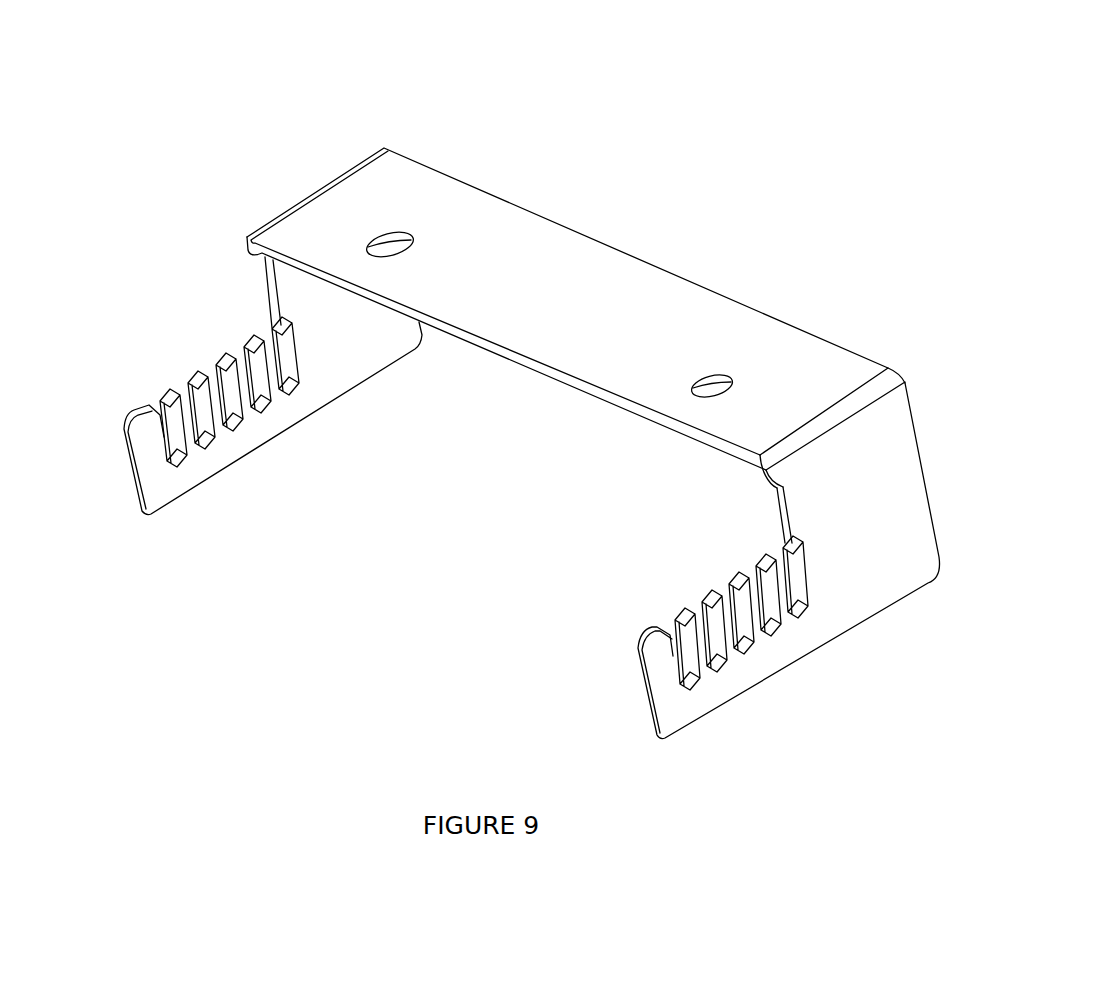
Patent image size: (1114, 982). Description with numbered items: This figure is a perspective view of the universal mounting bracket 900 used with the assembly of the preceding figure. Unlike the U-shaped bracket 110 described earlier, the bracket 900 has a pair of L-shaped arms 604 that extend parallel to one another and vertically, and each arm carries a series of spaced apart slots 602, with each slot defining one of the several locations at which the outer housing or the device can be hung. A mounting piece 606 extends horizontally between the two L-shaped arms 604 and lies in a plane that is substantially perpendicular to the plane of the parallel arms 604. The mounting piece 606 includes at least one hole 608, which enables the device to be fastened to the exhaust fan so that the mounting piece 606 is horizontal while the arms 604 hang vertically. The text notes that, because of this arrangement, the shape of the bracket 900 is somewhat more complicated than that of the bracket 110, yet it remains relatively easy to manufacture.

The universal mounting bracket 900 is at (823, 229).
The U-shaped bracket 110 is at (934, 486).
The mounting piece 606 is at (614, 238).
The hole 608 is at (408, 228).
The L-shaped arms 604 is at (344, 406).
The slots 602 is at (169, 377).